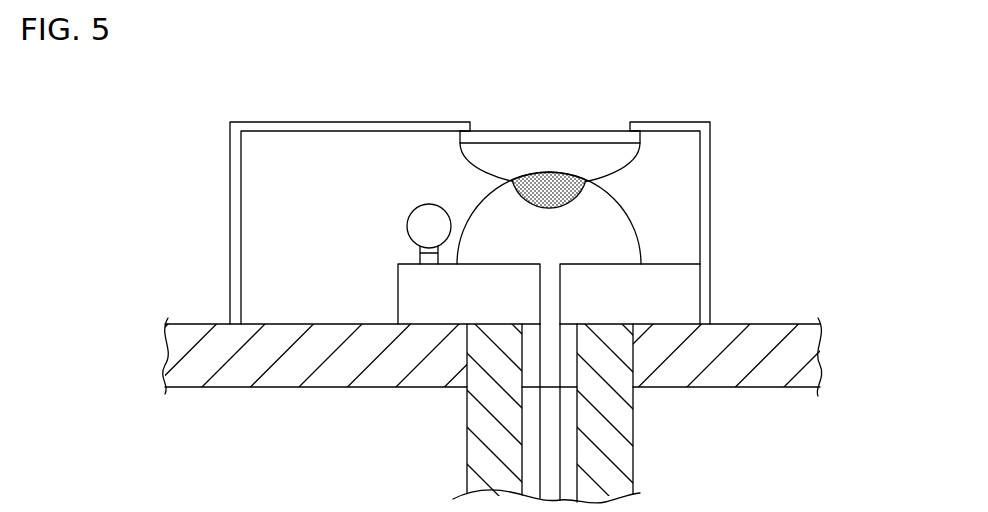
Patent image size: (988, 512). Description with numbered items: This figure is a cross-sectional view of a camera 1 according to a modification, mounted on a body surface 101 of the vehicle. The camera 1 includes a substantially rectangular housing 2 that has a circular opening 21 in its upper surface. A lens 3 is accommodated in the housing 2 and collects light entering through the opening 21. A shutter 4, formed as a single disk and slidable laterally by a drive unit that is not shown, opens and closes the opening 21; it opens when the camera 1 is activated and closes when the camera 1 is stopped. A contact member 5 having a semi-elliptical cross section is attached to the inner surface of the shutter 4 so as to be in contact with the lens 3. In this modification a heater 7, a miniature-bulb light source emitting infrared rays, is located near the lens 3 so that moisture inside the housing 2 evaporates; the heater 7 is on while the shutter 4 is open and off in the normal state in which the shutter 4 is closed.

The camera 1 is at (818, 105).
The housing 2 is at (322, 122).
The opening 21 is at (470, 131).
The lens 3 is at (515, 200).
The shutter 4 is at (583, 131).
The contact member 5 is at (625, 179).
The heater 7 is at (410, 218).
The body surface 101 is at (748, 324).